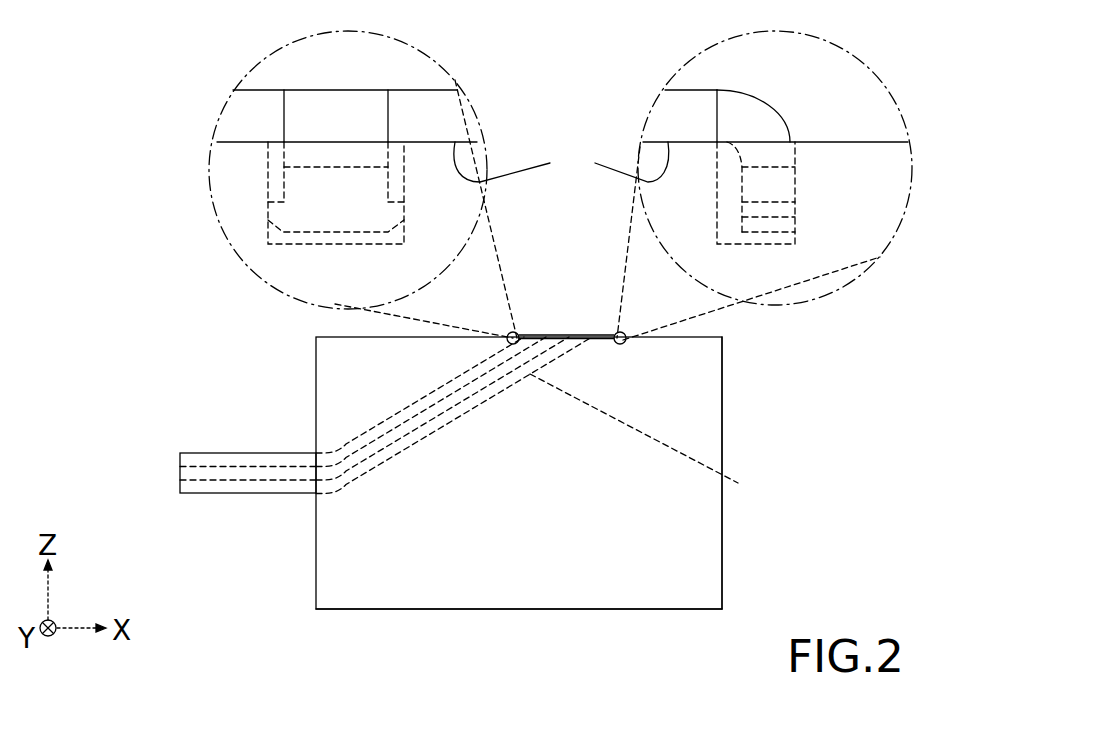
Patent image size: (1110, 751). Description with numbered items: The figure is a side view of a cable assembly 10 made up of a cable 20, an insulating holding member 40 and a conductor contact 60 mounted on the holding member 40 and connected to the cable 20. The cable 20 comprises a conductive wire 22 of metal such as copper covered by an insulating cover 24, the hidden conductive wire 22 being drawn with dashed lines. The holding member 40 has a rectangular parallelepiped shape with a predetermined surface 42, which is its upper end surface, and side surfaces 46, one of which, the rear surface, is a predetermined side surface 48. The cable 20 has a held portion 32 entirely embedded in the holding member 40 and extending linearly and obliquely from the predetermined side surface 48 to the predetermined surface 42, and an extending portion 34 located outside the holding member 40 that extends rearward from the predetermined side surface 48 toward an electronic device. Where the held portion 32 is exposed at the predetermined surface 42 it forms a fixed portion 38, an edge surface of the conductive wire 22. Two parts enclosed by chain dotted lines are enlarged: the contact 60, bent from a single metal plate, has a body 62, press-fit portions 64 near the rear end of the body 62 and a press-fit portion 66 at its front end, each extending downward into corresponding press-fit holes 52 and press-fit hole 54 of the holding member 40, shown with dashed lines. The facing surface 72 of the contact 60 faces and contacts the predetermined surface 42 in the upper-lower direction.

The cable assembly 10 is at (153, 302).
The cable 20 is at (199, 492).
The conductive wire 22 is at (288, 480).
The cover 24 is at (208, 493).
The held portion 32 is at (653, 438).
The extending portion 34 is at (267, 453).
The fixed portion 38 is at (560, 337).
The holding member 40 is at (316, 337).
The predetermined surface 42 is at (853, 142).
The side surface 46 is at (688, 573).
The predetermined side surface 48 is at (316, 586).
The press-fit hole 52 is at (404, 225).
The press-fit hole 54 is at (717, 217).
The contact 60 is at (530, 336).
The body 62 is at (453, 117).
The press-fit portion 64 is at (284, 183).
The press-fit portion 66 is at (780, 237).
The facing surface 72 is at (561, 162).